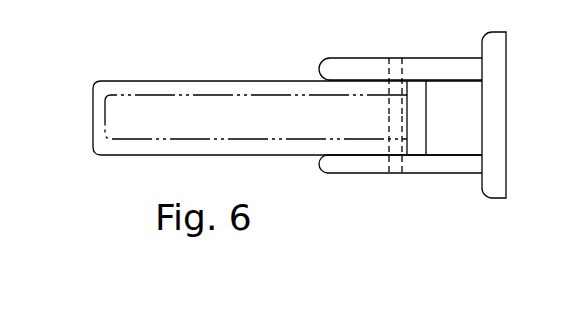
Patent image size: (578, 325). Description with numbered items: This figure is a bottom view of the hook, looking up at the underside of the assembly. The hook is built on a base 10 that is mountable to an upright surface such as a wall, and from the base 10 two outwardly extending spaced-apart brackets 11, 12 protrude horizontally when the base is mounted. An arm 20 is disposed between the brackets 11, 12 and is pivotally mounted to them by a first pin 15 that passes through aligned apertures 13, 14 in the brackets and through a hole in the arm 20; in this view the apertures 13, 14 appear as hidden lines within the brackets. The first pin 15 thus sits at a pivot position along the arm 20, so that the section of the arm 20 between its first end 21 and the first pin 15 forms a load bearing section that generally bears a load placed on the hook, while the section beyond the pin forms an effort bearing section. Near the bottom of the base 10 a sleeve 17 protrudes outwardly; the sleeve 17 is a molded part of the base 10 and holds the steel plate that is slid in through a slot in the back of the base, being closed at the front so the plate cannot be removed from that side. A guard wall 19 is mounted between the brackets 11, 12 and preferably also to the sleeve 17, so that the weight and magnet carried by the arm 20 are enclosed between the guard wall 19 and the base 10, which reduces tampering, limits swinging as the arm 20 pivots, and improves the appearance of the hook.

The base 10 is at (496, 46).
The bracket 11 is at (339, 70).
The bracket 12 is at (344, 167).
The aperture 13 is at (394, 57).
The aperture 14 is at (395, 174).
The first pin 15 is at (395, 116).
The sleeve 17 is at (460, 123).
The guard wall 19 is at (415, 138).
The arm 20 is at (146, 88).
The first end 21 is at (93, 118).